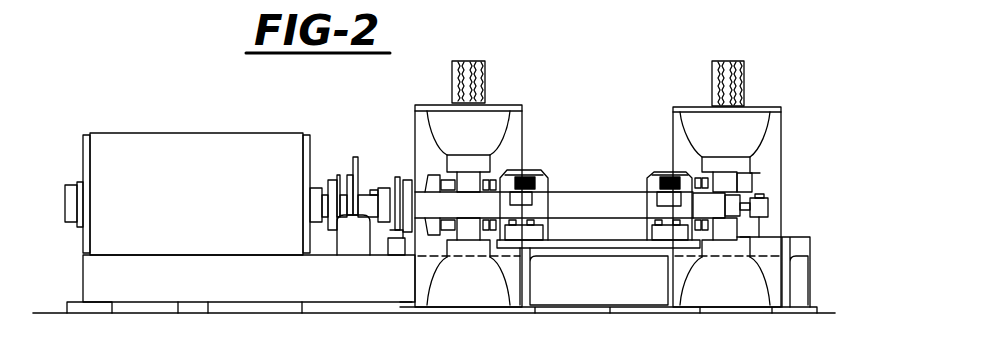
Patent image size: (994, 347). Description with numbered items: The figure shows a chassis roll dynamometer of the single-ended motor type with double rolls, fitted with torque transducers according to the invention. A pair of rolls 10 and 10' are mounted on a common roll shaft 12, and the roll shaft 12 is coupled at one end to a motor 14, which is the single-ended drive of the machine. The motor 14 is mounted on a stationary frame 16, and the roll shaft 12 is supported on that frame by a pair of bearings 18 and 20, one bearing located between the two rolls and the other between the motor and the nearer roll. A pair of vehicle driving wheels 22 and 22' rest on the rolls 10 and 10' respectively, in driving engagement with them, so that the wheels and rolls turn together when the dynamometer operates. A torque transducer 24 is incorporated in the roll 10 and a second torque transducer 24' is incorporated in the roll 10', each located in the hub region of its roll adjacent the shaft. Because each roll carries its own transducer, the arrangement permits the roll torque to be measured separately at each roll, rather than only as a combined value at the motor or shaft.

The roll 10 is at (794, 153).
The roll 10' is at (489, 157).
The roll shaft 12 is at (630, 200).
The motor 14 is at (162, 133).
The stationary frame 16 is at (78, 272).
The bearing 18 is at (674, 183).
The bearing 20 is at (540, 172).
The vehicle driving wheel 22 is at (751, 53).
The vehicle driving wheel 22' is at (506, 55).
The torque transducer 24 is at (814, 192).
The torque transducer 24' is at (415, 173).